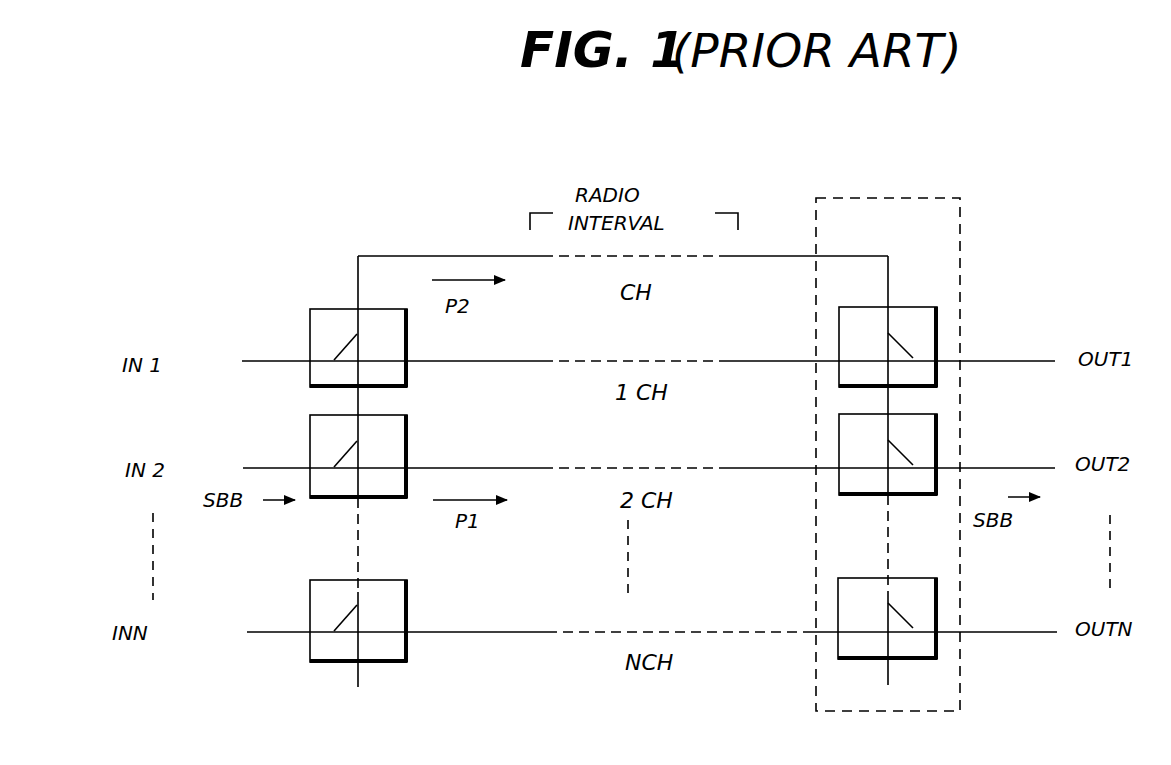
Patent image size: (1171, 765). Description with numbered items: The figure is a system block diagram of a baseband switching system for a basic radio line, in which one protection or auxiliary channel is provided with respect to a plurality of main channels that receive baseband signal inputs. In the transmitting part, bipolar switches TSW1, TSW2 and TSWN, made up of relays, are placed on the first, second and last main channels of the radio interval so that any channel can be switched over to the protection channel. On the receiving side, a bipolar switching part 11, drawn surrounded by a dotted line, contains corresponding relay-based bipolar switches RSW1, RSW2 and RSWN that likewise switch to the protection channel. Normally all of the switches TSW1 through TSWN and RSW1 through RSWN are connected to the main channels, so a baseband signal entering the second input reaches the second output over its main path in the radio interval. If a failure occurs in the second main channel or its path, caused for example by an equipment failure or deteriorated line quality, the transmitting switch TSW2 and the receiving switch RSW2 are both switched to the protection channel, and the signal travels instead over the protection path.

The bipolar switching part 11 is at (838, 194).
The bipolar switch TSW1 is at (337, 307).
The bipolar switch TSW2 is at (322, 415).
The bipolar switch TSWN is at (312, 592).
The bipolar switch RSW1 is at (937, 322).
The bipolar switch RSW2 is at (937, 437).
The bipolar switch RSWN is at (937, 598).